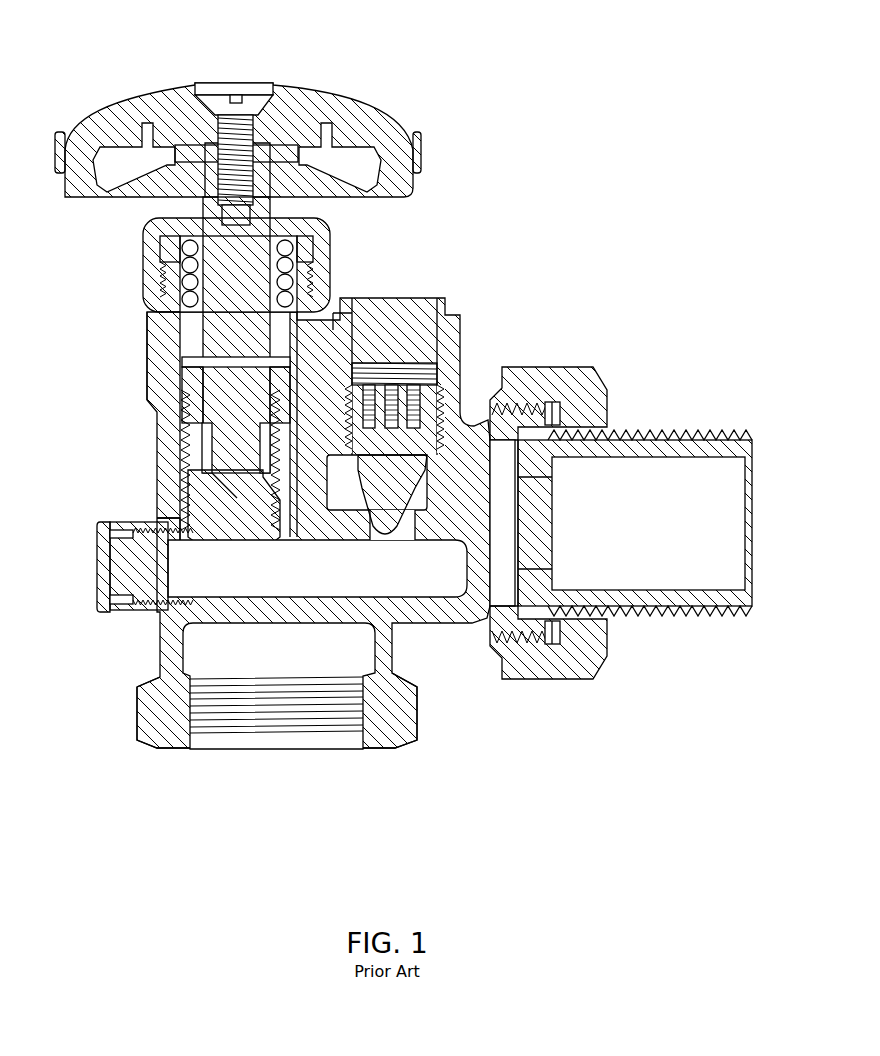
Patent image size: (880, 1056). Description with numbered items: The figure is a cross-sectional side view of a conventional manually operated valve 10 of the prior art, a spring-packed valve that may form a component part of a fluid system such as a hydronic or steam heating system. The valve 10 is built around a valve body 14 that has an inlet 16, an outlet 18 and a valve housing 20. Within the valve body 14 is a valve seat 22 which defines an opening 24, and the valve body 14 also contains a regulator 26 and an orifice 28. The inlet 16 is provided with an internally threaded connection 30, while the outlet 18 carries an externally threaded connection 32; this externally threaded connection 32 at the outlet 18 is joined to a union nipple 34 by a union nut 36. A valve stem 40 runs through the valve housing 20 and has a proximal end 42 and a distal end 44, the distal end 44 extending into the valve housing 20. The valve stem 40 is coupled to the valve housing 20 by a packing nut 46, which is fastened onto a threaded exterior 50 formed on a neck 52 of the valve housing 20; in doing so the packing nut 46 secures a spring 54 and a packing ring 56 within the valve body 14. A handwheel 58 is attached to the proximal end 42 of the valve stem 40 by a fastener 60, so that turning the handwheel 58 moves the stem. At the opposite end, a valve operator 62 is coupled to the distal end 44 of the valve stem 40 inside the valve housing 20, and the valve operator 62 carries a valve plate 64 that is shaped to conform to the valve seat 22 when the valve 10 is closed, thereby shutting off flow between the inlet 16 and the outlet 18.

The manually operated valve 10 is at (549, 66).
The valve body 14 is at (157, 440).
The inlet 16 is at (258, 772).
The outlet 18 is at (762, 522).
The valve housing 20 is at (113, 374).
The valve seat 22 is at (197, 612).
The opening 24 is at (237, 616).
The regulator 26 is at (404, 298).
The orifice 28 is at (394, 550).
The internally threaded connection 30 is at (345, 722).
The externally threaded connection 32 is at (524, 646).
The union nipple 34 is at (652, 430).
The union nut 36 is at (555, 367).
The valve stem 40 is at (165, 303).
The proximal end 42 is at (230, 253).
The distal end 44 is at (237, 458).
The packing nut 46 is at (182, 248).
The threaded exterior 50 is at (312, 258).
The neck 52 is at (302, 241).
The spring 54 is at (168, 258).
The packing ring 56 is at (230, 313).
The handwheel 58 is at (150, 90).
The fastener 60 is at (246, 92).
The valve operator 62 is at (212, 517).
The valve plate 64 is at (122, 571).